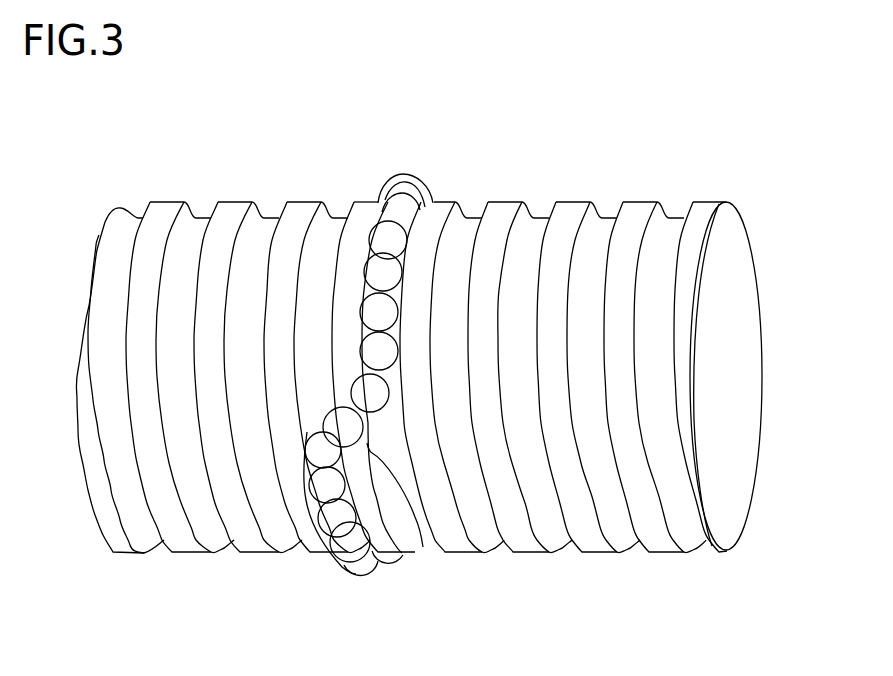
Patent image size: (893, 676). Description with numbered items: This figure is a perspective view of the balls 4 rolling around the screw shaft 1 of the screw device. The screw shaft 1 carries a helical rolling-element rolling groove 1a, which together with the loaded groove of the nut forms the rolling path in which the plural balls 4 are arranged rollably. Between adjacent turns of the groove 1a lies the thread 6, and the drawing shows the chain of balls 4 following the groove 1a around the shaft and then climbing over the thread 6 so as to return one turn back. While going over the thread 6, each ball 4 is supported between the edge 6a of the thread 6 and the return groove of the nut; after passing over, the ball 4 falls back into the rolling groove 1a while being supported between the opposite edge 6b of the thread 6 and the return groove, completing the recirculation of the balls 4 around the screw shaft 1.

The screw shaft 1 is at (742, 236).
The rolling-element rolling groove 1a is at (667, 216).
The balls 4 is at (405, 174).
The thread 6 is at (383, 532).
The edge of the thread 6a is at (320, 470).
The opposite edge of the thread 6b is at (392, 470).